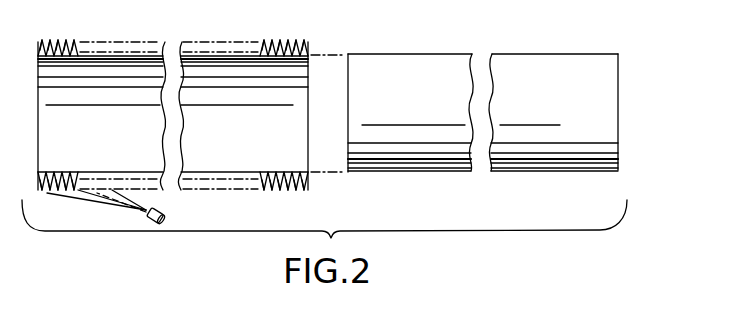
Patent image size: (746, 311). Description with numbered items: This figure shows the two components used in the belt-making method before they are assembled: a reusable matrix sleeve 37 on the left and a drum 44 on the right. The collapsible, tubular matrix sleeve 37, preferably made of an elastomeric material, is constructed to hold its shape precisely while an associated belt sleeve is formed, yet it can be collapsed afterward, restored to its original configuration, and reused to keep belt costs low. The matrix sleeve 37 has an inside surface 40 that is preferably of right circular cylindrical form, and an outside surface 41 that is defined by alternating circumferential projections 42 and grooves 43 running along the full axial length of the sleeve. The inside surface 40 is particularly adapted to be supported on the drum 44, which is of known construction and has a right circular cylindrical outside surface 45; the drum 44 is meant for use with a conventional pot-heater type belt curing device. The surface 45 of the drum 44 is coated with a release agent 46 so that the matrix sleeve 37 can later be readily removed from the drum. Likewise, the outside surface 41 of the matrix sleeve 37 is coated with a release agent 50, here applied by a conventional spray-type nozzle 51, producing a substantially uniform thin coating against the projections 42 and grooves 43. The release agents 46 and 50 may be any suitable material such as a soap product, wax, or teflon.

The matrix sleeve 37 is at (286, 33).
The inside surface 40 is at (62, 172).
The outside surface 41 is at (65, 48).
The circumferential projections 42 is at (55, 48).
The grooves 43 is at (56, 50).
The drum 44 is at (535, 67).
The outside surface 45 is at (423, 53).
The release agent 46 is at (425, 157).
The release agent 50 is at (95, 202).
The spray-type nozzle 51 is at (166, 212).